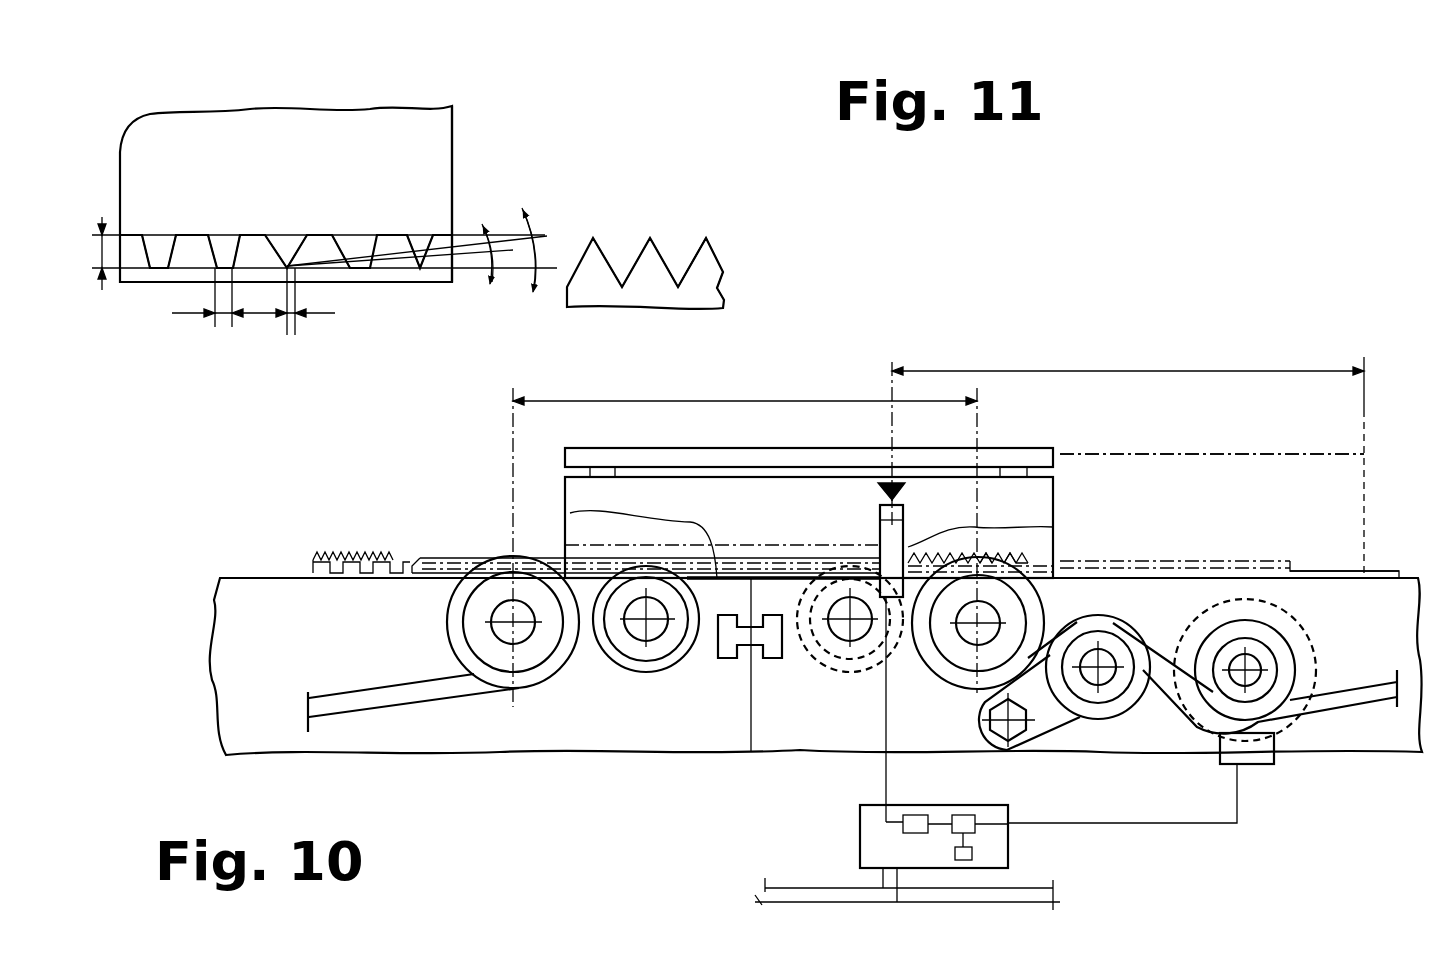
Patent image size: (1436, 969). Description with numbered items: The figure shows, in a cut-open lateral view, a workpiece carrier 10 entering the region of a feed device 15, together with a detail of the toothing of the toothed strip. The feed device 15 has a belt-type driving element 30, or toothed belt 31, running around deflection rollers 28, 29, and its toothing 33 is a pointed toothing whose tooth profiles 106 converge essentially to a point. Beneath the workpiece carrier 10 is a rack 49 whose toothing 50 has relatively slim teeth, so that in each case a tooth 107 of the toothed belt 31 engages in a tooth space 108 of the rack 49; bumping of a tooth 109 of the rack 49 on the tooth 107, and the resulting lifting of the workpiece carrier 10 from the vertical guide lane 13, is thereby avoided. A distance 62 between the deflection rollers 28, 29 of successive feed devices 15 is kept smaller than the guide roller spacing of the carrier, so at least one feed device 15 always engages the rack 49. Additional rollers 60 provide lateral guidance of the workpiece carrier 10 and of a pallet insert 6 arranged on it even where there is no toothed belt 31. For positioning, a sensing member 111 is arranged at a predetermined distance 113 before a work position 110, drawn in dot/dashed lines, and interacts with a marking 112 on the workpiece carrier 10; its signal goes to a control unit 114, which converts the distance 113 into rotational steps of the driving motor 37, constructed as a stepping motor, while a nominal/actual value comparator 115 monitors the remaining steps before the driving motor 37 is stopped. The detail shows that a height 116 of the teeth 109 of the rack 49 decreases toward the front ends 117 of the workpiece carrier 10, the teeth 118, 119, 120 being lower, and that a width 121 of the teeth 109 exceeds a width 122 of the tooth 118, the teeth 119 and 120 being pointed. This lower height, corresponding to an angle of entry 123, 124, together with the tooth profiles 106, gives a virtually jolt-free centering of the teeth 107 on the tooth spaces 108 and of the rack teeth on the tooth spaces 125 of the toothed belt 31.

In FIG. 10, the pallet insert 6 is at (992, 462).
In FIG. 11, the workpiece carrier 10 is at (200, 128).
In FIG. 10, the workpiece carrier 10 is at (730, 512).
In FIG. 10, the vertical guide lane 13 is at (1366, 578).
In FIG. 10, the feed device 15 is at (236, 560).
In FIG. 10, the deflection roller 28 is at (530, 650).
In FIG. 10, the deflection roller 29 is at (960, 650).
In FIG. 11, the belt-type driving element 30 is at (707, 291).
In FIG. 11, the toothed belt 31 is at (602, 298).
In FIG. 10, the toothed belt 31 is at (348, 560).
In FIG. 11, the toothing 33 is at (696, 228).
In FIG. 10, the driving motor 37 is at (1278, 720).
In FIG. 11, the rack 49 is at (400, 228).
In FIG. 10, the rack 49 is at (995, 552).
In FIG. 11, the toothing 50 is at (171, 270).
In FIG. 10, the roller 60 is at (636, 645).
In FIG. 10, the distance 62 is at (676, 400).
In FIG. 11, the tooth profile 106 is at (690, 262).
In FIG. 11, the tooth 107 is at (649, 263).
In FIG. 10, the tooth 107 is at (1030, 560).
In FIG. 11, the tooth space 108 is at (333, 262).
In FIG. 10, the tooth space 108 is at (1035, 556).
In FIG. 11, the tooth 109 is at (225, 250).
In FIG. 10, the work position 110 is at (1365, 482).
In FIG. 10, the sensing member 111 is at (883, 537).
In FIG. 10, the marking 112 is at (890, 478).
In FIG. 10, the distance 113 is at (1058, 368).
In FIG. 10, the control unit 114 is at (848, 848).
In FIG. 10, the nominal/actual value comparator 115 is at (970, 832).
In FIG. 11, the height 116 is at (100, 250).
In FIG. 11, the front end 117 is at (456, 144).
In FIG. 11, the tooth 118 is at (292, 244).
In FIG. 11, the tooth 119 is at (348, 244).
In FIG. 11, the tooth 120 is at (420, 248).
In FIG. 11, the width 121 is at (185, 318).
In FIG. 11, the width 122 is at (318, 318).
In FIG. 11, the angle of entry 123 is at (478, 292).
In FIG. 11, the angle of entry 124 is at (525, 294).
In FIG. 11, the tooth space 125 is at (612, 240).